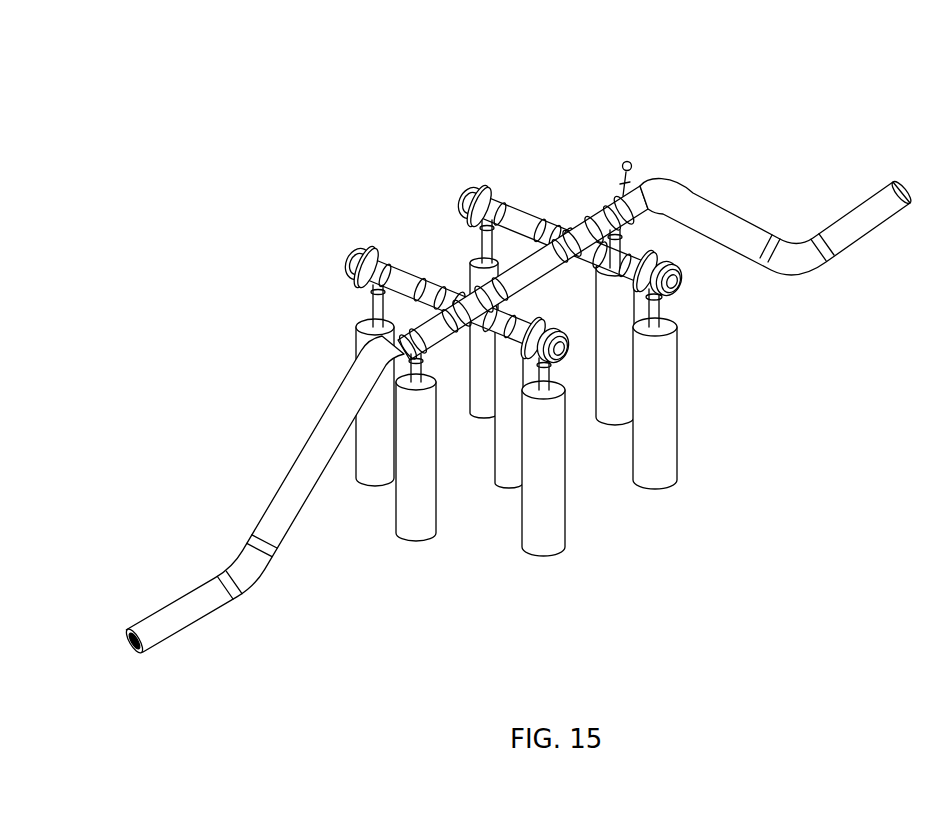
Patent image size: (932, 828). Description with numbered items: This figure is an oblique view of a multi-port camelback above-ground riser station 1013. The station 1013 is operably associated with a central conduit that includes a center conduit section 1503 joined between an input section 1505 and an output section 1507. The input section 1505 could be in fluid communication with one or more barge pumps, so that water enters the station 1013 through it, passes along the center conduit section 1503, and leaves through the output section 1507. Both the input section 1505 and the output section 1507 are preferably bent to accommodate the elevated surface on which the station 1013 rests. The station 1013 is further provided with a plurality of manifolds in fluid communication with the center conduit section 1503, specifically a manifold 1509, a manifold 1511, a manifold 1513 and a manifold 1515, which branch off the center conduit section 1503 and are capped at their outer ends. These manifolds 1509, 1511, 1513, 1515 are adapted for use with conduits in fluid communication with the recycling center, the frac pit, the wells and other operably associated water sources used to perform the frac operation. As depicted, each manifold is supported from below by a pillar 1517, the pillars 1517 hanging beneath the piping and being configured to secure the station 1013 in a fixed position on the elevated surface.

The riser station 1013 is at (178, 113).
The center conduit section 1503 is at (470, 282).
The input section 1505 is at (292, 458).
The output section 1507 is at (723, 205).
The manifold 1509 is at (342, 258).
The manifold 1511 is at (565, 362).
The manifold 1513 is at (464, 192).
The manifold 1515 is at (683, 284).
The pillar 1517 is at (522, 505).